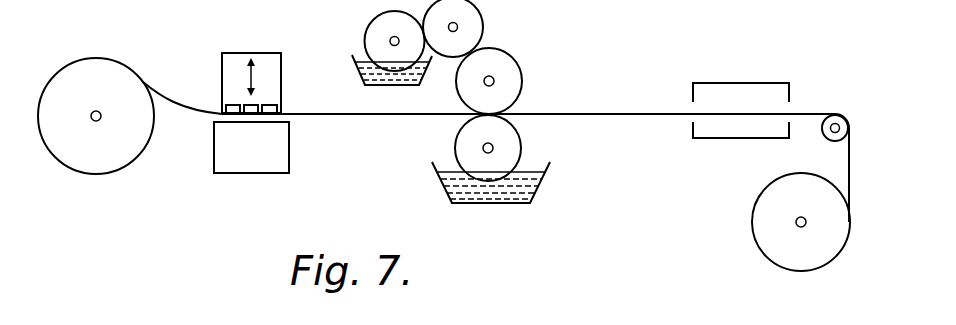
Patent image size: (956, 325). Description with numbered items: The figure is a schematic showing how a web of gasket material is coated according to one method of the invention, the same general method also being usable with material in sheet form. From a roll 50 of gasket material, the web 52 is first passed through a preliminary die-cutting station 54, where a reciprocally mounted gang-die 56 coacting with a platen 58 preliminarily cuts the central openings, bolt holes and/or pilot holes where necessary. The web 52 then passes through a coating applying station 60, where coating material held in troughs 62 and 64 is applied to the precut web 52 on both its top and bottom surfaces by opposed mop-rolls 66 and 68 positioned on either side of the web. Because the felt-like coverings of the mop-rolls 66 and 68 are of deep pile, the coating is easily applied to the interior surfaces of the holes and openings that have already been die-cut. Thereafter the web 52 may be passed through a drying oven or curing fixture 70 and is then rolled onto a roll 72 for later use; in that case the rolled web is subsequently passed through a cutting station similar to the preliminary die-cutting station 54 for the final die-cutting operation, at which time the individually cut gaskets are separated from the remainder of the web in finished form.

The roll 50 is at (87, 152).
The web 52 is at (166, 96).
The preliminary die-cutting station 54 is at (198, 127).
The gang-die 56 is at (282, 85).
The platen 58 is at (268, 162).
The coating applying station 60 is at (542, 97).
The trough 62 is at (513, 190).
The trough 64 is at (363, 62).
The mop-roll 66 is at (500, 63).
The mop-roll 68 is at (523, 144).
The drying oven or curing fixture 70 is at (727, 83).
The roll 72 is at (765, 213).